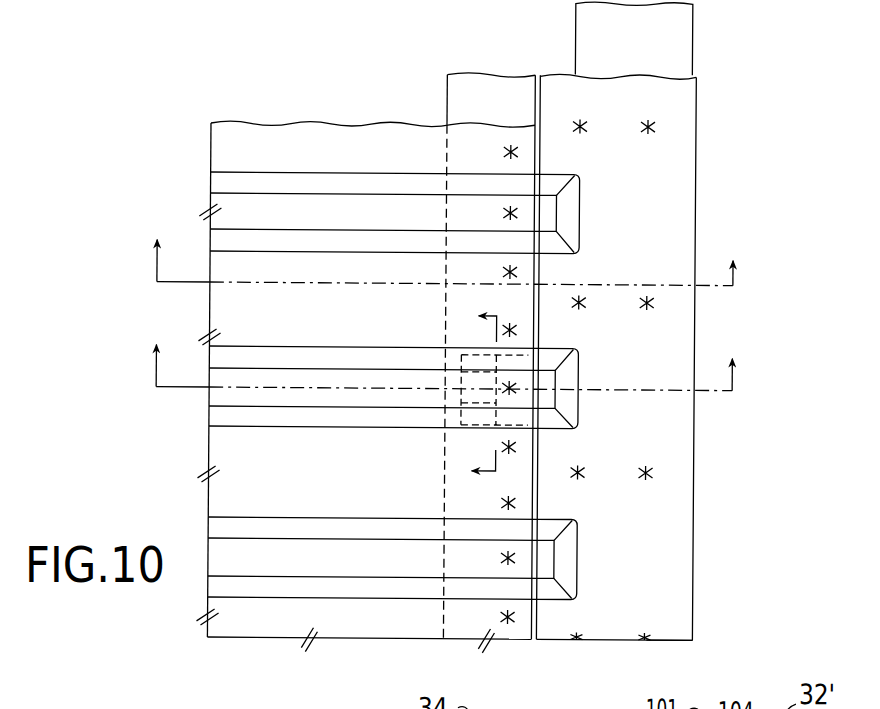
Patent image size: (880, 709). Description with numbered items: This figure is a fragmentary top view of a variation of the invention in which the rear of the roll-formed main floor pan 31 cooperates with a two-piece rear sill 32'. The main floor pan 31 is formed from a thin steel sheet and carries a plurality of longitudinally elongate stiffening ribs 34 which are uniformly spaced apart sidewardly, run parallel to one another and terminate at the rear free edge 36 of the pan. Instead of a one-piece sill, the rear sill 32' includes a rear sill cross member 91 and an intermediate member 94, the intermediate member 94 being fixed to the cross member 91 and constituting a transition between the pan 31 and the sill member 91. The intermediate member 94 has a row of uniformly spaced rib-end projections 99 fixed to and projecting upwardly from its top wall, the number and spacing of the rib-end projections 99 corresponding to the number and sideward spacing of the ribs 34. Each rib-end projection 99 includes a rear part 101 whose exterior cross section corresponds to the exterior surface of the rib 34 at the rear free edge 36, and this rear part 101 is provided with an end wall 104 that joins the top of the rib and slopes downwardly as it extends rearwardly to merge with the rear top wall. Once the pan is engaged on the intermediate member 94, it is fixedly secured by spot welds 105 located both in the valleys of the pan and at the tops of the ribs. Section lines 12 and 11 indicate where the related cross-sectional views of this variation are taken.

The main floor pan 31 is at (345, 120).
The stiffening ribs 34 is at (227, 198).
The rear free edge 36 is at (541, 619).
The rear sill cross member 91 is at (699, 38).
The intermediate member 94 is at (701, 145).
The end wall 104 is at (568, 370).
The rear part 101 is at (548, 394).
The rib-end projections 99 is at (580, 550).
The spot welds 105 is at (504, 499).
The section line 12 is at (443, 242).
The section line 11 is at (443, 389).
The rear sill 32' is at (719, 596).